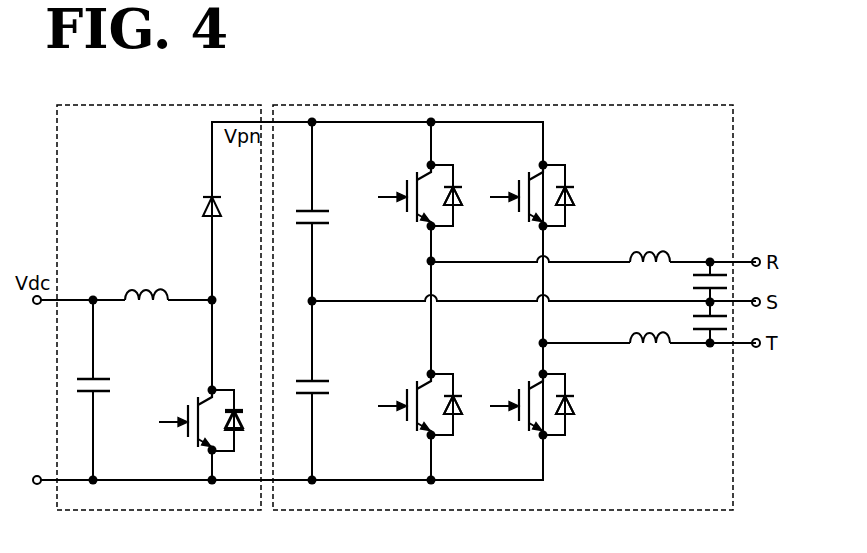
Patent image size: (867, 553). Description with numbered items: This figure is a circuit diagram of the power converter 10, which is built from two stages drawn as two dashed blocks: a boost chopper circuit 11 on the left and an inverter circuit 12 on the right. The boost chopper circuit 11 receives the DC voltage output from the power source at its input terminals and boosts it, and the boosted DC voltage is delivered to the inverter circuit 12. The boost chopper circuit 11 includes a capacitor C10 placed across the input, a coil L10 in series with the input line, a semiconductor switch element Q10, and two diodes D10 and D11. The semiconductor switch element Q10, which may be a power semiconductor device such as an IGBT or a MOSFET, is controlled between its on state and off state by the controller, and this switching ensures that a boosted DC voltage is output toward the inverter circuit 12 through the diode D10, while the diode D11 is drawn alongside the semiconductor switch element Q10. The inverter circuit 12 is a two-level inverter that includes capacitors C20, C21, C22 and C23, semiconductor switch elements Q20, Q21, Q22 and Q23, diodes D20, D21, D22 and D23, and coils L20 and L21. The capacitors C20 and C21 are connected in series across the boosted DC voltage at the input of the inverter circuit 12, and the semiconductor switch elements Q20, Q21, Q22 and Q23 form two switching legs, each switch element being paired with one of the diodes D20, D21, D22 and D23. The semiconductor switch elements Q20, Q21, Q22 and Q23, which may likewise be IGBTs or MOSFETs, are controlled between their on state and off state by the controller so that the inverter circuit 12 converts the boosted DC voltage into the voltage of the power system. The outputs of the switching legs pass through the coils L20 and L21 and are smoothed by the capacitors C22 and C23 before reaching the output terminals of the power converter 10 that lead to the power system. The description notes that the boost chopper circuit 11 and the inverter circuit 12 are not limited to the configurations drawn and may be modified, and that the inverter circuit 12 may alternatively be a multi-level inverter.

The power converter 10 is at (406, 53).
The boost chopper circuit 11 is at (80, 104).
The inverter circuit 12 is at (528, 104).
The coil L10 is at (146, 283).
The capacitor C10 is at (105, 372).
The diode D10 is at (194, 191).
The semiconductor switch element Q10 is at (200, 415).
The diode D11 is at (241, 394).
The capacitor C20 is at (325, 205).
The capacitor C21 is at (325, 375).
The semiconductor switch element Q20 is at (420, 187).
The semiconductor switch element Q21 is at (420, 396).
The semiconductor switch element Q22 is at (532, 187).
The semiconductor switch element Q23 is at (532, 396).
The diode D20 is at (471, 209).
The diode D21 is at (471, 419).
The diode D22 is at (582, 209).
The diode D23 is at (582, 419).
The coil L20 is at (650, 245).
The coil L21 is at (650, 355).
The capacitor C22 is at (688, 283).
The capacitor C23 is at (688, 323).